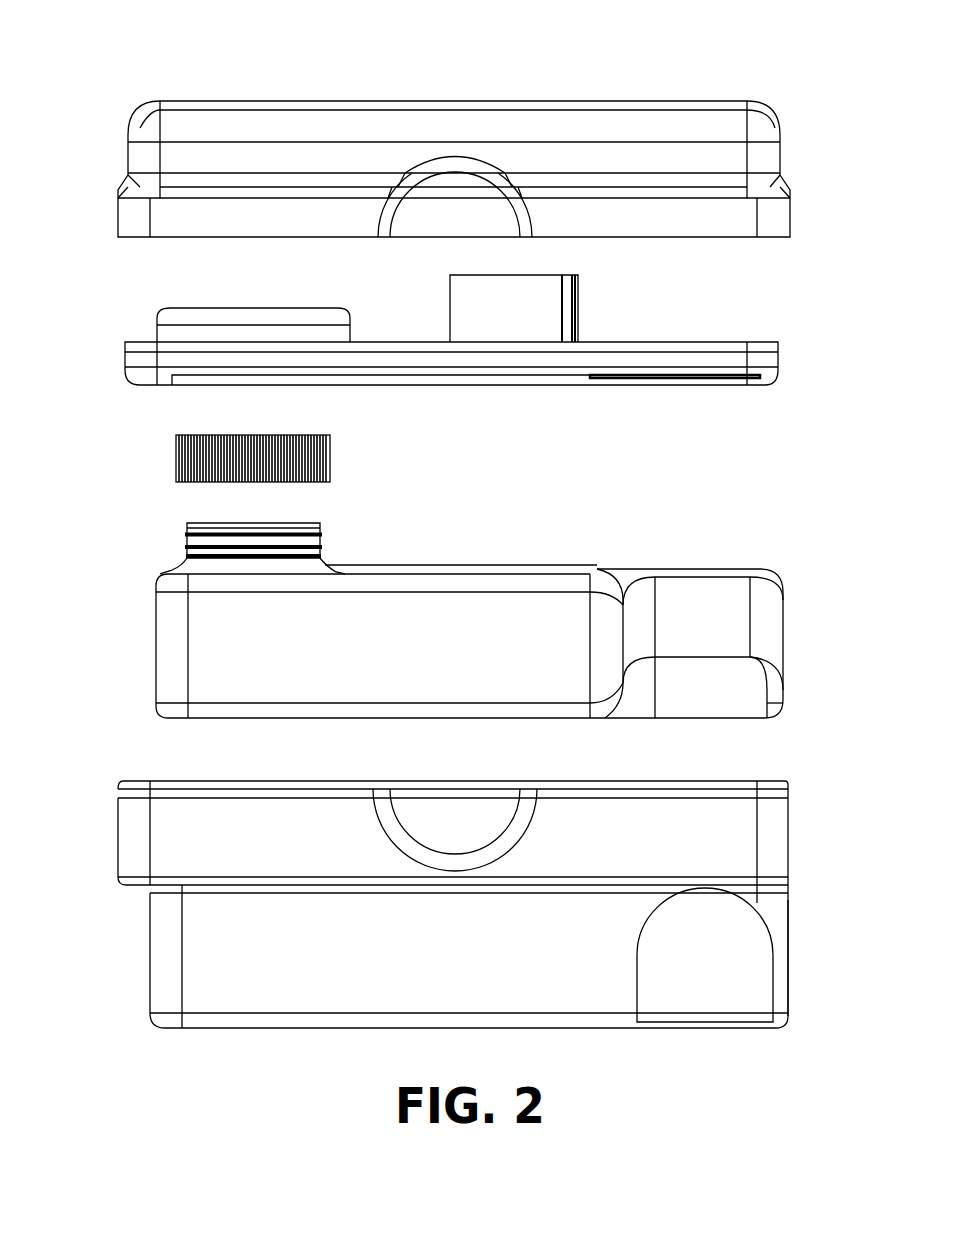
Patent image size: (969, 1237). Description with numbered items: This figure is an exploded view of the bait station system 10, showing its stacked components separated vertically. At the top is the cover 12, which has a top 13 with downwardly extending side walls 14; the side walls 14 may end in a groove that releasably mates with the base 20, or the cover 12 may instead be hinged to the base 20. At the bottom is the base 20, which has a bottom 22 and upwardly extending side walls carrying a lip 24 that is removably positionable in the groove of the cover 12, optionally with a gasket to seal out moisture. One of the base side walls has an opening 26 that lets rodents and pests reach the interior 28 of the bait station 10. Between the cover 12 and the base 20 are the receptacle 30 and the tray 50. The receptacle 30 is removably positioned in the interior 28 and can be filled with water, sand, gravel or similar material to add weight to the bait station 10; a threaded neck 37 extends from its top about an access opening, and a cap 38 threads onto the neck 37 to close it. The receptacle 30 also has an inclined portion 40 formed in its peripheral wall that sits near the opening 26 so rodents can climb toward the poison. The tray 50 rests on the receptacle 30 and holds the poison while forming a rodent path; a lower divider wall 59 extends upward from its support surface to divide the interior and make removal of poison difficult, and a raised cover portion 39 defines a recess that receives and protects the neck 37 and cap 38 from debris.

The bait station system 10 is at (808, 72).
The cover 12 is at (142, 112).
The top 13 is at (288, 103).
The side walls 14 is at (125, 158).
The base 20 is at (118, 828).
The bottom 22 is at (266, 1030).
The lip 24 is at (790, 782).
The opening 26 is at (776, 987).
The interior 28 is at (705, 1005).
The receptacle 30 is at (172, 640).
The threaded neck 37 is at (187, 530).
The cap 38 is at (176, 447).
The cover portion 39 is at (160, 318).
The inclined portion 40 is at (730, 618).
The tray 50 is at (780, 346).
The lower divider wall 59 is at (548, 275).